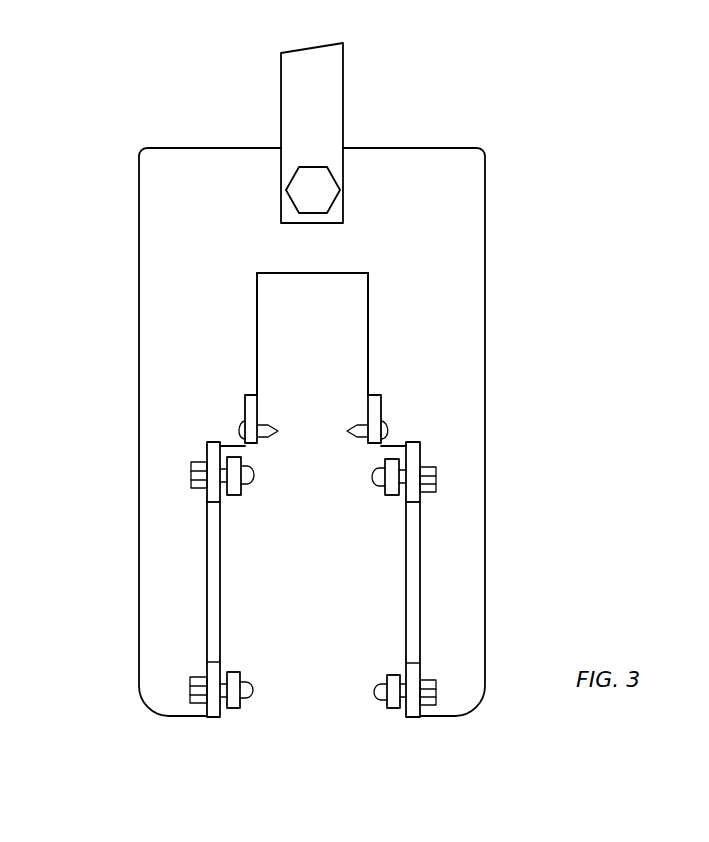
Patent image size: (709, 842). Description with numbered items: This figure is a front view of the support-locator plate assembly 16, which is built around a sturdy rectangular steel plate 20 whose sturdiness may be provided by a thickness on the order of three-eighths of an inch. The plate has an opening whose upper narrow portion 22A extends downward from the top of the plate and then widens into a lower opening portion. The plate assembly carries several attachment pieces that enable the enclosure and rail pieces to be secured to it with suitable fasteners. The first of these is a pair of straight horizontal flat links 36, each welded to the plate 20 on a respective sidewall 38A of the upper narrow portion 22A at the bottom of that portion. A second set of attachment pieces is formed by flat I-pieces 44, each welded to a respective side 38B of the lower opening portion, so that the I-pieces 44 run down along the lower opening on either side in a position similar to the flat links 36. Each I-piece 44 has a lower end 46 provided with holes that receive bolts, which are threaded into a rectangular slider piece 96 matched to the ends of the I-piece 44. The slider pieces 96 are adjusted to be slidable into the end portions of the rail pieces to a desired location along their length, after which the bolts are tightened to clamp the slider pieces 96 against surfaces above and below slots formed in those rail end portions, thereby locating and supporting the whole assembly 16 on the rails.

The support-locator plate assembly 16 is at (498, 206).
The rectangular steel plate 20 is at (419, 163).
The upper narrow portion of the opening 22A is at (337, 348).
The straight horizontal flat links 36 is at (238, 400).
The sidewall of the upper opening portion 38A is at (262, 334).
The side of the lower opening portion 38B is at (225, 545).
The flat I-pieces 44 is at (199, 596).
The lower end of I-piece 46 is at (212, 455).
The rectangular slider piece 96 is at (233, 708).